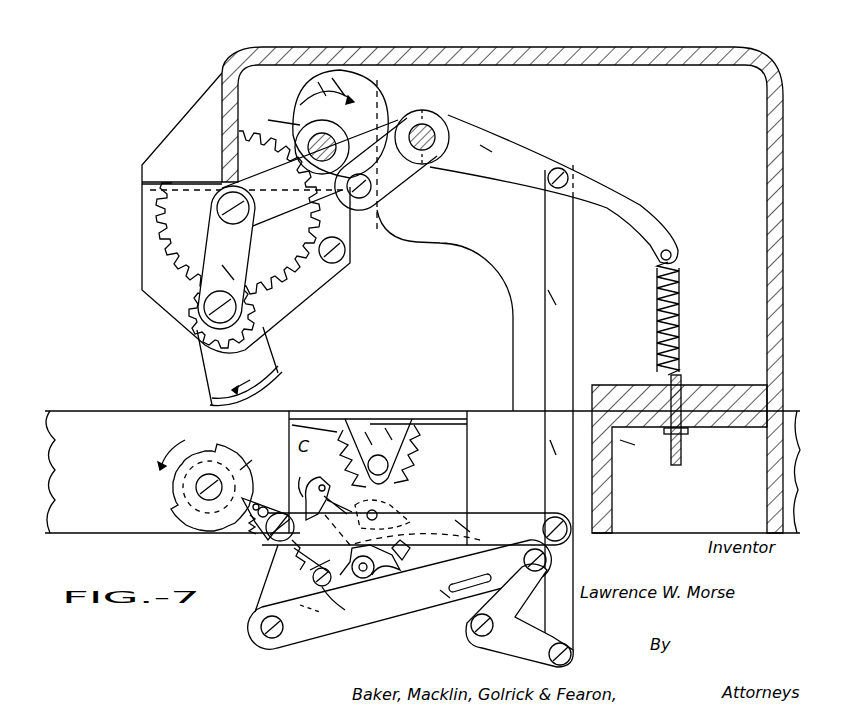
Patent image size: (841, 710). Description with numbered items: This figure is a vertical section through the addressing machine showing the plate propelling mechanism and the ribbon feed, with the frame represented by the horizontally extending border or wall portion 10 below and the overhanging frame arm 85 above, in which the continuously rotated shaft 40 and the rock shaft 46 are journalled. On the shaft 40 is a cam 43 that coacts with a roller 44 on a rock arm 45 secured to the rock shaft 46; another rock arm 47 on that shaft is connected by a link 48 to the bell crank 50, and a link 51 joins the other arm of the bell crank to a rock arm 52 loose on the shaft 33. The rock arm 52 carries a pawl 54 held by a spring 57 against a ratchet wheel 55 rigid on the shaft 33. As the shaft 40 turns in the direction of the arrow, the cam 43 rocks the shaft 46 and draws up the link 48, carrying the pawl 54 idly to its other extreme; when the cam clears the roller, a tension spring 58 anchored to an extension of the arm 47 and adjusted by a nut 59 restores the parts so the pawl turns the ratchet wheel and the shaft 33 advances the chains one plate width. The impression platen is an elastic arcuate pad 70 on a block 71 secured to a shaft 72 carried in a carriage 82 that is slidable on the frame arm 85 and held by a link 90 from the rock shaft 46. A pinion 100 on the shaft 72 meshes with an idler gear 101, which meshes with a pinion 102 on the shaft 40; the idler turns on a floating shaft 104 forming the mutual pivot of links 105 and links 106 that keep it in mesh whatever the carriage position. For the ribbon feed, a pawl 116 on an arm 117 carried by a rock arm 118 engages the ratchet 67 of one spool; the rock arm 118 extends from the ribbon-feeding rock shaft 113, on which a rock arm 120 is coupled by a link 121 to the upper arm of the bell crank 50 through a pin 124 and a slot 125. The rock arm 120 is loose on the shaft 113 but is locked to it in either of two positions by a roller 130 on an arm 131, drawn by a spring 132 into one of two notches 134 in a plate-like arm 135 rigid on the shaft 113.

The border or wall portion 10 is at (75, 420).
The shaft 33 is at (195, 500).
The continuously rotated shaft 40 is at (310, 140).
The cam 43 is at (372, 84).
The roller 44 is at (384, 208).
The rock arm 45 is at (410, 184).
The rock shaft 46 is at (440, 125).
The rock arm 47 is at (512, 150).
The link 48 is at (566, 325).
The bell crank 50 is at (505, 645).
The link 51 is at (490, 540).
The rock arm 52 is at (274, 542).
The pawl 54 is at (262, 500).
The ratchet wheel 55 is at (240, 468).
The spring 57 is at (250, 533).
The tension spring 58 is at (683, 302).
The nut 59 is at (690, 432).
The ratchet 67 is at (408, 452).
The elastic arcuate pad 70 is at (282, 378).
The block 71 is at (265, 345).
The shaft 72 is at (208, 322).
The carriage 82 is at (325, 275).
The overhanging frame arm 85 is at (556, 62).
The link 90 is at (345, 256).
The pinion 100 is at (195, 320).
The idler gear 101 is at (180, 240).
The pinion 102 is at (269, 118).
The floating shaft 104 is at (250, 205).
The links 105 is at (226, 257).
The links 106 is at (310, 174).
The rock shaft 113 is at (390, 505).
The pawl 116 is at (332, 478).
The arm 117 is at (299, 476).
The rock arm 118 is at (344, 501).
The rock arm 120 is at (300, 582).
The link 121 is at (410, 600).
The pin 124 is at (575, 558).
The slot 125 is at (478, 580).
The roller 130 is at (374, 564).
The arm 131 is at (340, 598).
The spring 132 is at (320, 560).
The notches 134 is at (430, 540).
The plate-like arm 135 is at (406, 555).